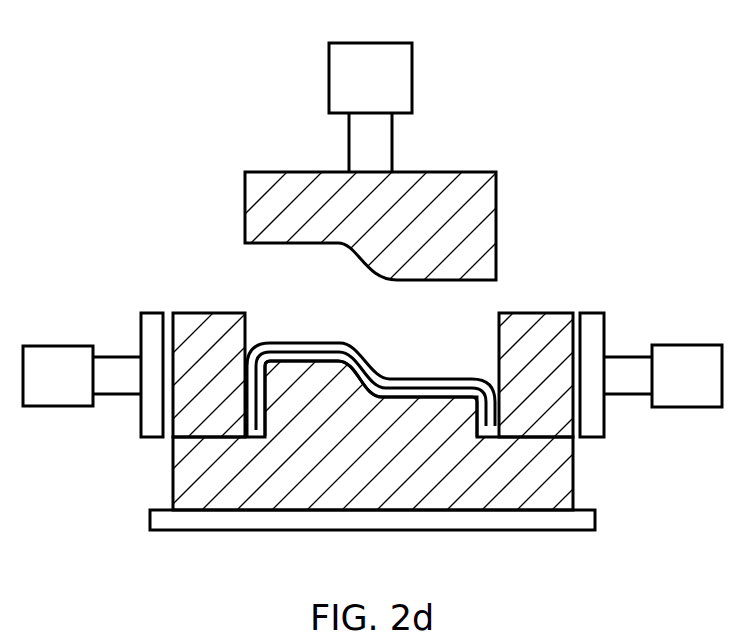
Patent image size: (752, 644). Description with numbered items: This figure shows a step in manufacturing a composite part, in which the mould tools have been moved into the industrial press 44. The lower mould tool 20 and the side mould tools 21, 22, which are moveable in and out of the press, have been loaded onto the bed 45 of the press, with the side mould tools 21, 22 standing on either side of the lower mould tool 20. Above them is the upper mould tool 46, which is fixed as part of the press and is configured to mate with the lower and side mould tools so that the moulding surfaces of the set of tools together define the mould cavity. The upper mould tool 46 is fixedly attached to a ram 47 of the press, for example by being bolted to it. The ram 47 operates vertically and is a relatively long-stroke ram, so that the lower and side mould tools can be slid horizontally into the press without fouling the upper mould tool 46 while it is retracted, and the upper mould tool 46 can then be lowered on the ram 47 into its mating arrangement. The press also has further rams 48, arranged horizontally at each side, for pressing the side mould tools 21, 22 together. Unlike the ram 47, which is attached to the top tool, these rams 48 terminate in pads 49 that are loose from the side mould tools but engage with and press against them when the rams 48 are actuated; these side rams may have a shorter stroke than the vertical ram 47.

The lower mould tool 20 is at (562, 484).
The side mould tool 21 is at (212, 322).
The side mould tool 22 is at (537, 316).
The industrial press 44 is at (596, 244).
The bed of the press 45 is at (549, 521).
The upper mould tool 46 is at (482, 213).
The ram 47 is at (412, 92).
The rams 48 is at (57, 352).
The pads 49 is at (152, 320).